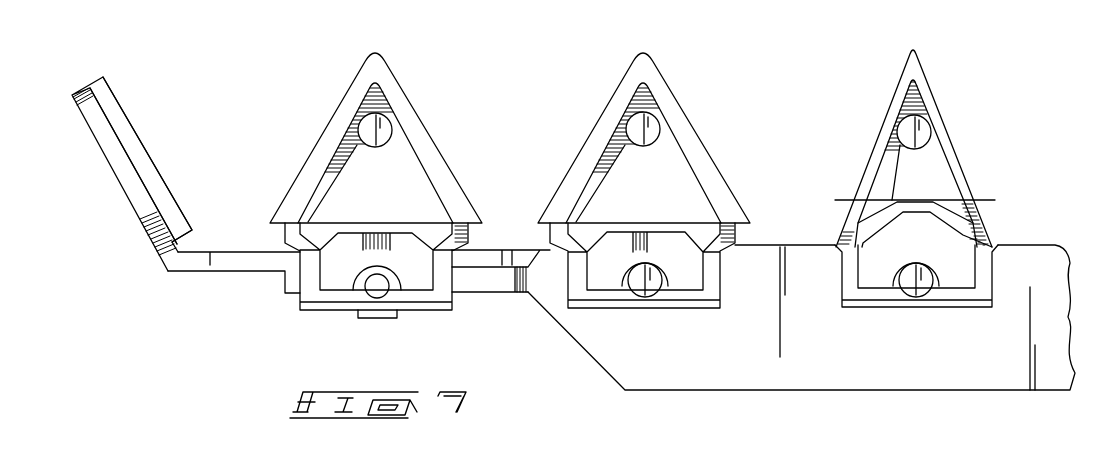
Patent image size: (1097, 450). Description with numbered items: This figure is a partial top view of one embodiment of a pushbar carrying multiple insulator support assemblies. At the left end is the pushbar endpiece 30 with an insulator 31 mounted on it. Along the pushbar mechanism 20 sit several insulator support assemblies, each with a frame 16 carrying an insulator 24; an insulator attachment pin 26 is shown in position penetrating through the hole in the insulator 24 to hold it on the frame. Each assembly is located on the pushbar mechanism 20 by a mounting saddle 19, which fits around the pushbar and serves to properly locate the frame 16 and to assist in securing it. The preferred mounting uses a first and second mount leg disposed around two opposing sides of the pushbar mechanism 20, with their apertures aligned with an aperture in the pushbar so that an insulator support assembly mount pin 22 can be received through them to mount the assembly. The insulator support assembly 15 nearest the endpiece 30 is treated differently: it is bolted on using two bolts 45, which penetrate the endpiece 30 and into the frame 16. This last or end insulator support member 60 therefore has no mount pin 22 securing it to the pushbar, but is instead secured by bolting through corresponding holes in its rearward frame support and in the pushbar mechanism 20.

The end insulator support member 60 is at (415, 53).
The insulator support assembly 15 is at (586, 123).
The frame 16 is at (417, 170).
The insulator attachment pin 26 is at (656, 123).
The insulator 24 is at (692, 142).
The insulator support assembly mount pin 22 is at (657, 286).
The mounting saddle 19 is at (443, 308).
The pushbar mechanism 20 is at (888, 368).
The pushbar endpiece 30 is at (103, 162).
The insulator 31 is at (155, 157).
The bolts 45 is at (368, 240).